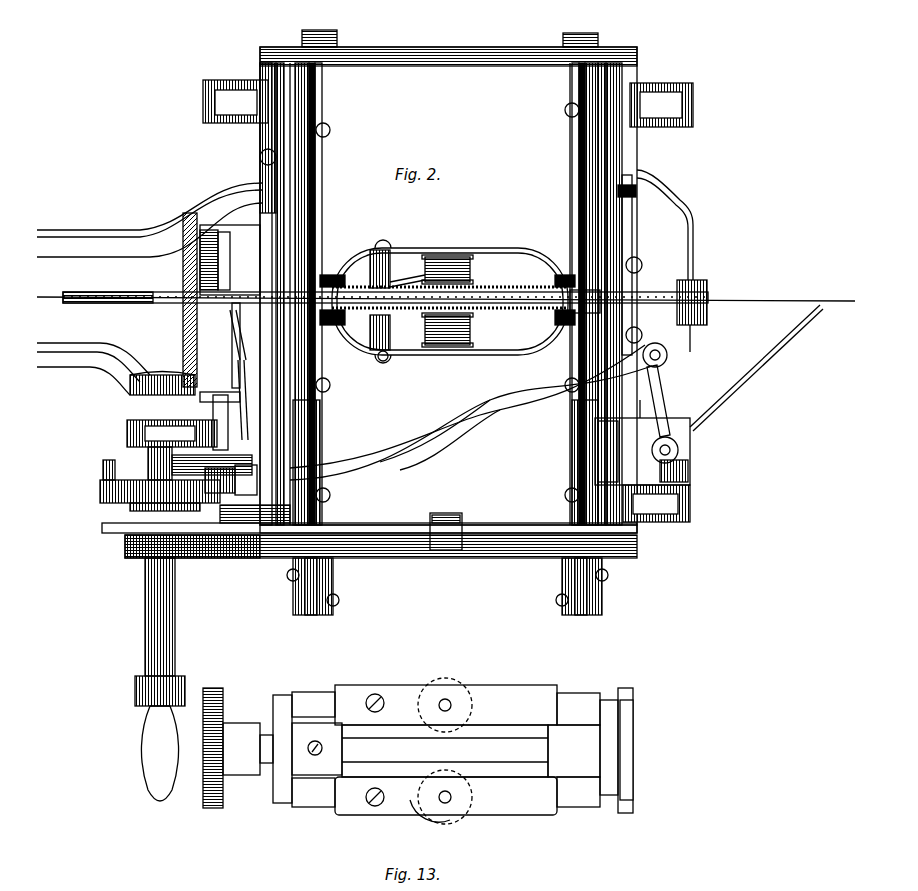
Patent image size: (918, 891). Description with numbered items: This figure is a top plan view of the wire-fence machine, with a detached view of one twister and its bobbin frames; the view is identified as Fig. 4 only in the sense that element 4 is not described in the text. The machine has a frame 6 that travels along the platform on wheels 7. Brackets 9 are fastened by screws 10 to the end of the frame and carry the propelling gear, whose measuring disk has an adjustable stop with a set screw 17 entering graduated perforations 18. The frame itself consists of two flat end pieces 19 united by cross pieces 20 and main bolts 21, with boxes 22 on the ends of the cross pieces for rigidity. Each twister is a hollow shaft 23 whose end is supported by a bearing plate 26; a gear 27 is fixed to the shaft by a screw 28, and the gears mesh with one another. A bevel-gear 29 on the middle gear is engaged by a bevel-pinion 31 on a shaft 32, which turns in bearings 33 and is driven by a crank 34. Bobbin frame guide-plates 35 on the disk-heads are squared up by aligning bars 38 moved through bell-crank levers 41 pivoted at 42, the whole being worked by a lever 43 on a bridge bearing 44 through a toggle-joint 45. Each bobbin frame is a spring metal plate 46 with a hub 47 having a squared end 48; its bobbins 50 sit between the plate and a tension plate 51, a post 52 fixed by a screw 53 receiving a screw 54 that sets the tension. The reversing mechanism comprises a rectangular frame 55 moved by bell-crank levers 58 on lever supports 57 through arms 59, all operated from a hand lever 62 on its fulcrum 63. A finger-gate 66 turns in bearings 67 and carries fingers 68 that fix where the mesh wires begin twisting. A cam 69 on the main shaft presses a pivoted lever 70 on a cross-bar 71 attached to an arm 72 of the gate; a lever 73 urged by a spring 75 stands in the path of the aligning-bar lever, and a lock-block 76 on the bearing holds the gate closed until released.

In FIG. 2, the shaft 4 is at (775, 292).
In FIG. 2, the frame 6 is at (458, 64).
In FIG. 2, the wheels 7 is at (203, 98).
In FIG. 2, the brackets 9 is at (92, 236).
In FIG. 2, the screws 10 is at (259, 158).
In FIG. 2, the set screw 17 is at (232, 525).
In FIG. 2, the graduated perforations 18 is at (245, 530).
In FIG. 2, the end pieces 19 is at (280, 118).
In FIG. 2, the cross pieces 20 is at (458, 42).
In FIG. 2, the main bolts 21 is at (318, 162).
In FIG. 2, the boxes 22 is at (266, 72).
In FIG. 13, the hollow shaft 23 is at (445, 751).
In FIG. 2, the bearing plate 26 is at (266, 250).
In FIG. 13, the gear 27 is at (203, 735).
In FIG. 13, the screw 28 is at (312, 750).
In FIG. 2, the bevel-gear 29 is at (183, 338).
In FIG. 2, the bevel-pinion 31 is at (175, 378).
In FIG. 2, the shaft 32 is at (175, 612).
In FIG. 2, the bearings 33 is at (127, 430).
In FIG. 2, the crank 34 is at (157, 715).
In FIG. 2, the bobbin frame guide-plates 35 is at (125, 548).
In FIG. 2, the aligning bars 38 is at (642, 330).
In FIG. 2, the bell-crank levers 41 is at (628, 236).
In FIG. 2, the pivot 42 is at (650, 205).
In FIG. 2, the lever 43 is at (106, 303).
In FIG. 2, the bridge bearing 44 is at (495, 290).
In FIG. 2, the toggle-joint 45 is at (707, 290).
In FIG. 2, the spring metal plate 46 is at (498, 256).
In FIG. 13, the spring metal plate 46 is at (490, 692).
In FIG. 13, the hub 47 is at (310, 693).
In FIG. 13, the squared end 48 is at (283, 694).
In FIG. 2, the bobbins 50 is at (460, 255).
In FIG. 13, the bobbins 50 is at (450, 680).
In FIG. 2, the tension plate 51 is at (418, 278).
In FIG. 13, the tension plate 51 is at (430, 818).
In FIG. 2, the post 52 is at (396, 325).
In FIG. 2, the screw 53 is at (388, 362).
In FIG. 13, the screw 53 is at (380, 696).
In FIG. 2, the screw 54 is at (378, 256).
In FIG. 13, the screw 54 is at (366, 797).
In FIG. 2, the rectangular frame 55 is at (305, 212).
In FIG. 2, the lever supports 57 is at (300, 615).
In FIG. 2, the bell-crank levers 58 is at (565, 582).
In FIG. 2, the arms 59 is at (320, 500).
In FIG. 2, the hand lever 62 is at (390, 528).
In FIG. 2, the fulcrum 63 is at (453, 514).
In FIG. 2, the finger-gate 66 is at (665, 450).
In FIG. 2, the bearings 67 is at (642, 451).
In FIG. 2, the fingers 68 is at (756, 368).
In FIG. 2, the cam 69 is at (103, 482).
In FIG. 2, the pivoted lever 70 is at (148, 464).
In FIG. 2, the cross-bar 71 is at (455, 420).
In FIG. 2, the arm 72 is at (665, 412).
In FIG. 2, the lever 73 is at (218, 240).
In FIG. 2, the spring 75 is at (243, 371).
In FIG. 2, the lock-block 76 is at (150, 452).